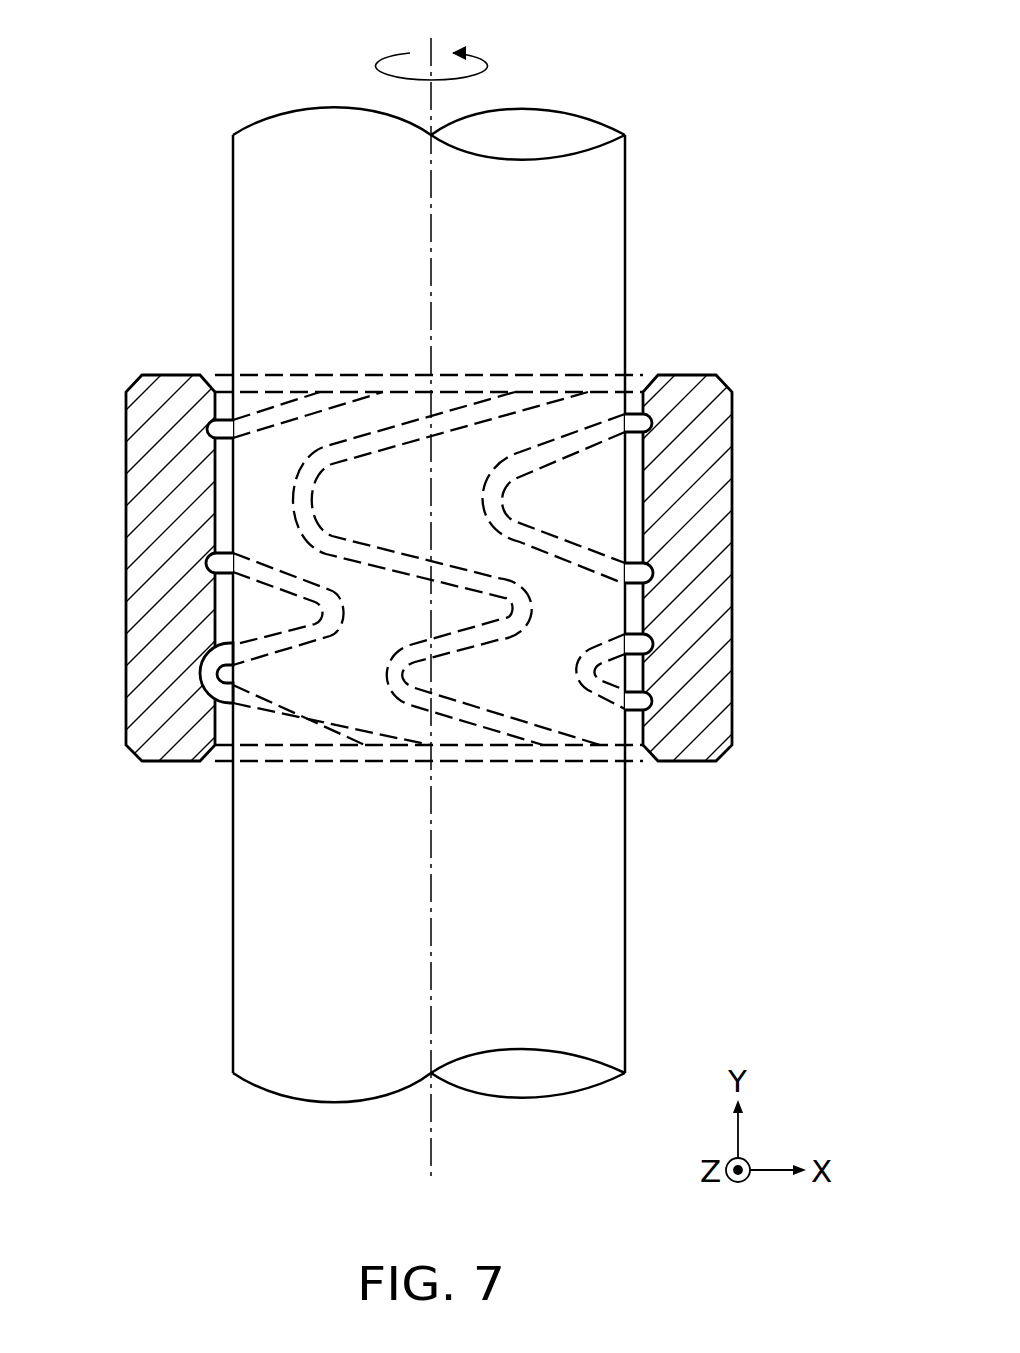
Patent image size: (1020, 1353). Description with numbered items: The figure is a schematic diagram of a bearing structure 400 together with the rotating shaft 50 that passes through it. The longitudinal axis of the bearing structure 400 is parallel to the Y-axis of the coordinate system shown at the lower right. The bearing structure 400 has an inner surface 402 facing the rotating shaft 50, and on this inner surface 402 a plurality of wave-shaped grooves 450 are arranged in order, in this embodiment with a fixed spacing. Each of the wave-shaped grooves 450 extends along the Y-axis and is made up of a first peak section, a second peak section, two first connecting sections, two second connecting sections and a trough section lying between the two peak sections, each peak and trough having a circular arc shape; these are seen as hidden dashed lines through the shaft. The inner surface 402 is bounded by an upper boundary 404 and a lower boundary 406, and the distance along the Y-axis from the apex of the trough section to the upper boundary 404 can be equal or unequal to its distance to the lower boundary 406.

The rotating shaft 50 is at (607, 212).
The bearing structure 400 is at (510, 568).
The inner surface 402 is at (218, 483).
The upper boundary 404 is at (223, 392).
The lower boundary 406 is at (226, 757).
The wave-shaped grooves 450 is at (530, 392).